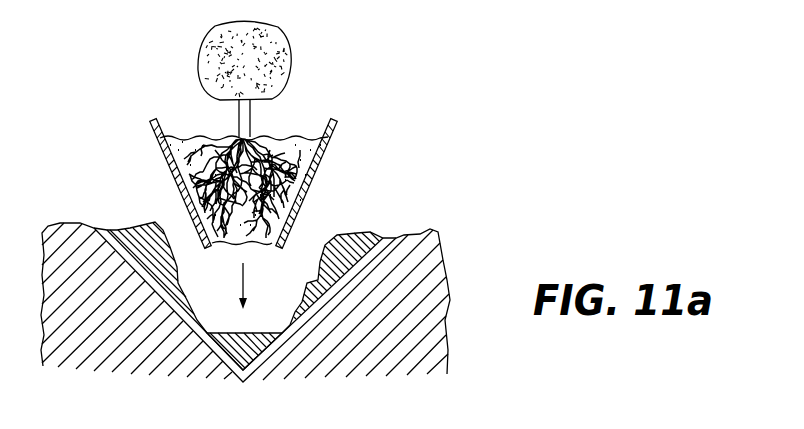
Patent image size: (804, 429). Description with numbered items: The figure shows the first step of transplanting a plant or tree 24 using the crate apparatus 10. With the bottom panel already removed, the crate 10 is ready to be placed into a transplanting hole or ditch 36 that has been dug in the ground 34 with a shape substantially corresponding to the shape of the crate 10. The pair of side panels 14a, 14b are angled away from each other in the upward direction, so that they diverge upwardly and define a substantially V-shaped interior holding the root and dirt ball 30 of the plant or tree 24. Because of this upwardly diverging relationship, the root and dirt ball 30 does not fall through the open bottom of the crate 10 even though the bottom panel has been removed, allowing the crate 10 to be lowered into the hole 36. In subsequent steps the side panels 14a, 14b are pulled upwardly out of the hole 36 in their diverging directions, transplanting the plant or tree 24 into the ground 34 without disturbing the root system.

The crate apparatus 10 is at (116, 74).
The plant or tree 24 is at (288, 33).
The root and dirt ball 30 is at (292, 138).
The side panel 14a is at (169, 166).
The side panel 14b is at (317, 164).
The ground 34 is at (383, 238).
The transplanting hole or ditch 36 is at (218, 290).